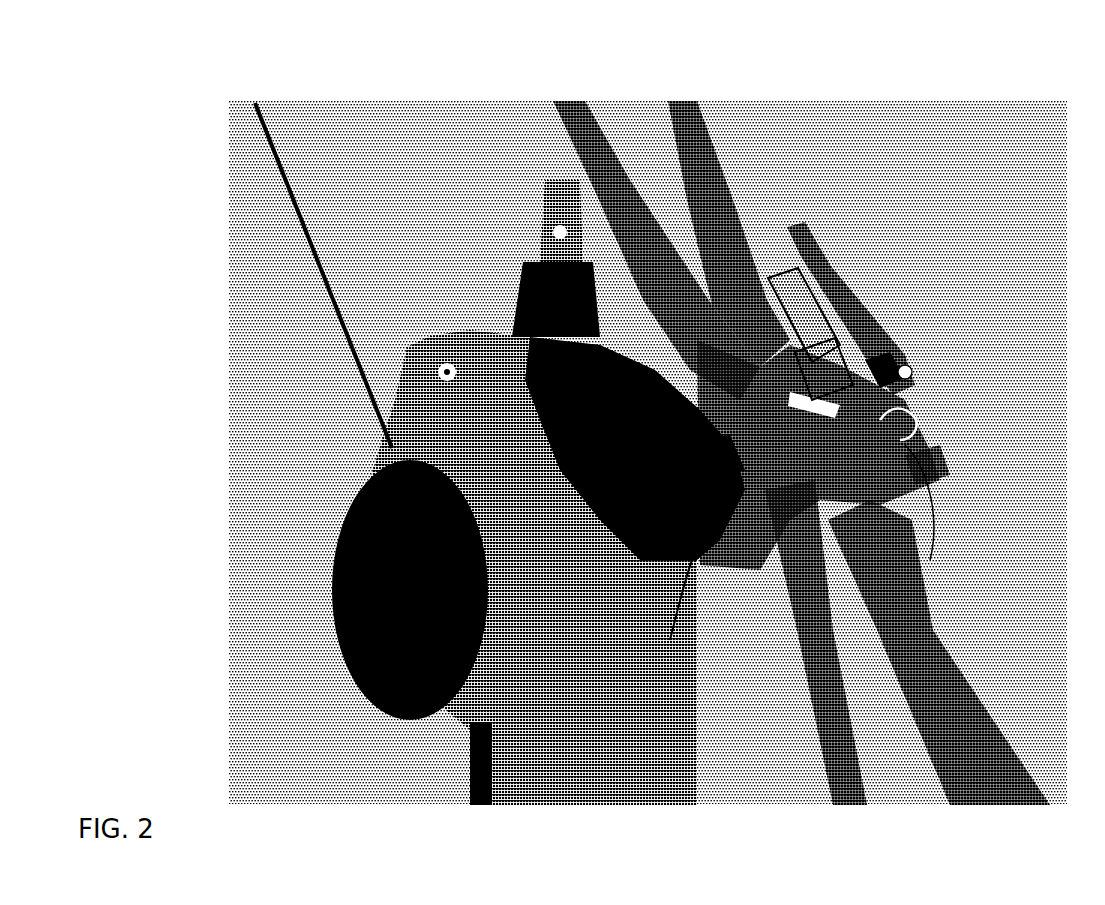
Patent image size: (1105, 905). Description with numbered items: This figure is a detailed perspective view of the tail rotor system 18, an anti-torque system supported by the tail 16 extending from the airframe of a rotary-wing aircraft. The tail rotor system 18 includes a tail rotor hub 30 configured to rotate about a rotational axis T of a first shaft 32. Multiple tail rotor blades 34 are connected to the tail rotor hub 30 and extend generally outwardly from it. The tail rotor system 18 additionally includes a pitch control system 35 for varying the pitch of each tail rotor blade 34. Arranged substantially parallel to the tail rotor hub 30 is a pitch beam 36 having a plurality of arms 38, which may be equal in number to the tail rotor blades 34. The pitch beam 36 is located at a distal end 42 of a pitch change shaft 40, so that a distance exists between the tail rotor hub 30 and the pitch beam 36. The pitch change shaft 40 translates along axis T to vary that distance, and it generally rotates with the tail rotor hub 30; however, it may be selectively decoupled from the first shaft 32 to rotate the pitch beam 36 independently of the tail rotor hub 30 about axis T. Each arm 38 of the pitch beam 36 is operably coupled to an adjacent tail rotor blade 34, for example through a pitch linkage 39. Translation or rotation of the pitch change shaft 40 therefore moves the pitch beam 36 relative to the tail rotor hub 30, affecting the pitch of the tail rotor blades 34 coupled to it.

The tail 16 is at (540, 614).
The tail rotor system 18 is at (198, 158).
The tail rotor hub 30 is at (700, 378).
The first shaft 32 is at (740, 525).
The tail rotor blades 34 is at (604, 165).
The pitch control system 35 is at (917, 290).
The pitch beam 36 is at (877, 365).
The arms 38 is at (837, 293).
The pitch linkage 39 is at (790, 275).
The pitch change shaft 40 is at (905, 422).
The distal end 42 is at (907, 365).
The rotational axis T is at (905, 368).